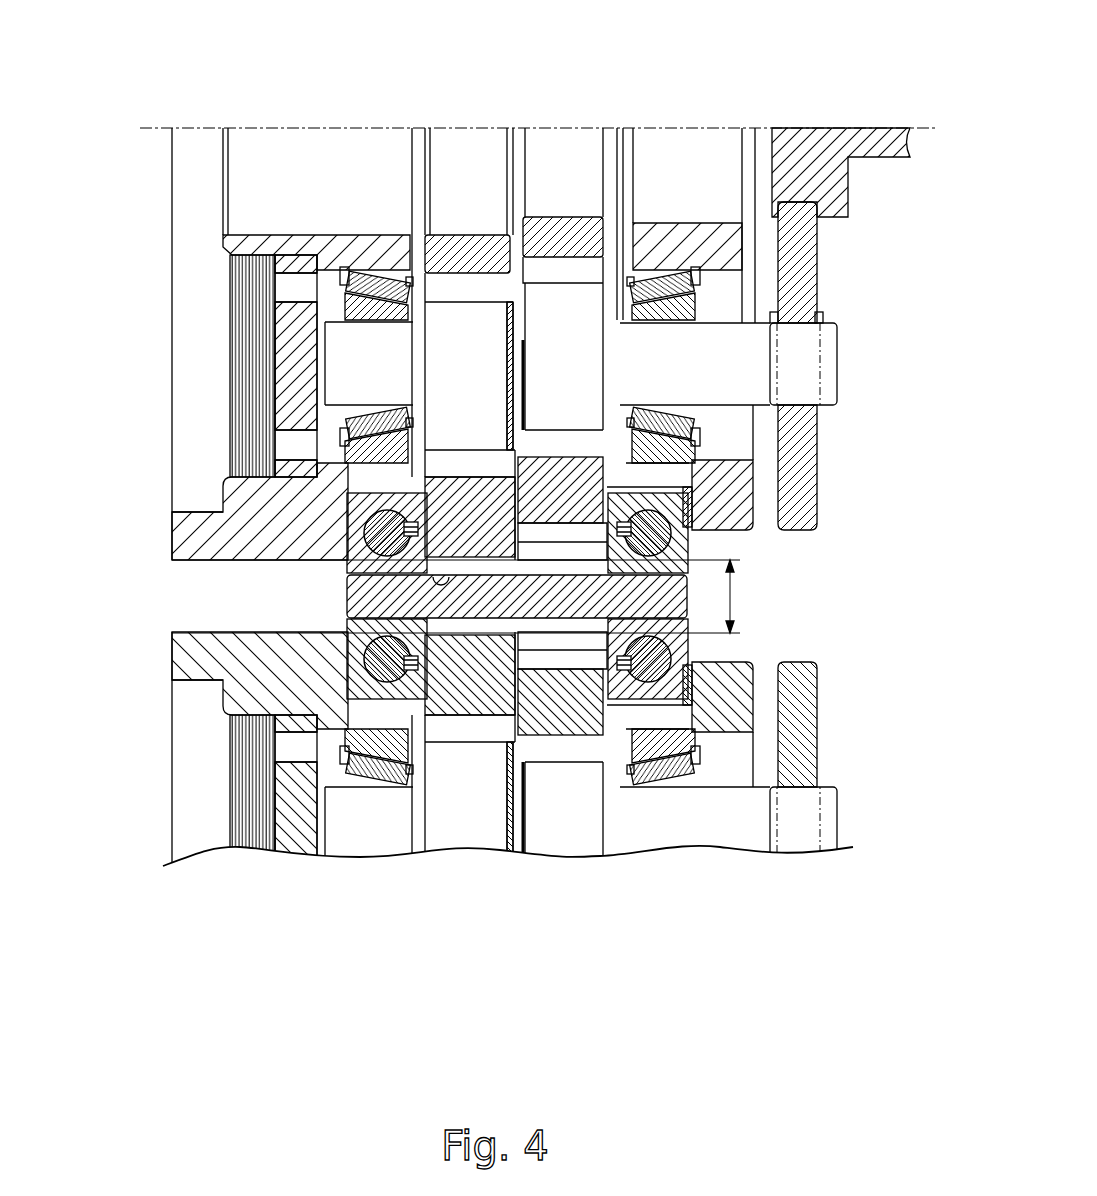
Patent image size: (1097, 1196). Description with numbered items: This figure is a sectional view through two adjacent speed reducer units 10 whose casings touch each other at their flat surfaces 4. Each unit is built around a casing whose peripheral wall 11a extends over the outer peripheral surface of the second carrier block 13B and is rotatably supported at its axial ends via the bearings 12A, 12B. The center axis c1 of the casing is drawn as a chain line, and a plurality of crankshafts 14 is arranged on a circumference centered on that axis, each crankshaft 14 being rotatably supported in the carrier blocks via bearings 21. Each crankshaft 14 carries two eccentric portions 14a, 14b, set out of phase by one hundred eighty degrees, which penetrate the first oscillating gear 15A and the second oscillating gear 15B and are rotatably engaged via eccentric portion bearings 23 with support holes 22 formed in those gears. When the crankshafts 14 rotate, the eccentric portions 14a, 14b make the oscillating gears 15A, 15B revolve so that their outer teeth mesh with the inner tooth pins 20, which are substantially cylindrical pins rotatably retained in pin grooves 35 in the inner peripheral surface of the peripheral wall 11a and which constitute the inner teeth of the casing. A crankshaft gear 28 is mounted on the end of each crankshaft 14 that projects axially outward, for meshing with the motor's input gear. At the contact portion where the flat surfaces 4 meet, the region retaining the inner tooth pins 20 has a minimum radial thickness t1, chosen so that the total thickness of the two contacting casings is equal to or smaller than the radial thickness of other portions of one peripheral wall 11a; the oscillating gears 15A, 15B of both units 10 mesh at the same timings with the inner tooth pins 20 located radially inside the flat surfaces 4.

The flat surface 4 is at (484, 606).
The speed reducer unit 10 is at (808, 105).
The peripheral wall 11a is at (350, 590).
The bearing 12A is at (665, 546).
The bearing 12B is at (372, 540).
The second carrier block 13B is at (183, 522).
The crankshaft 14 is at (833, 365).
The eccentric portion 14a is at (620, 403).
The eccentric portion 14b is at (355, 402).
The first oscillating gear 15A is at (660, 483).
The second oscillating gear 15B is at (345, 462).
The inner tooth pin 20 is at (493, 716).
The bearing 21 is at (353, 235).
The support hole 22 is at (392, 265).
The eccentric portion bearing 23 is at (428, 285).
The crankshaft gear 28 is at (817, 253).
The pin groove 35 is at (630, 702).
The center axis c1 is at (150, 127).
The minimum radial thickness t1 is at (467, 596).